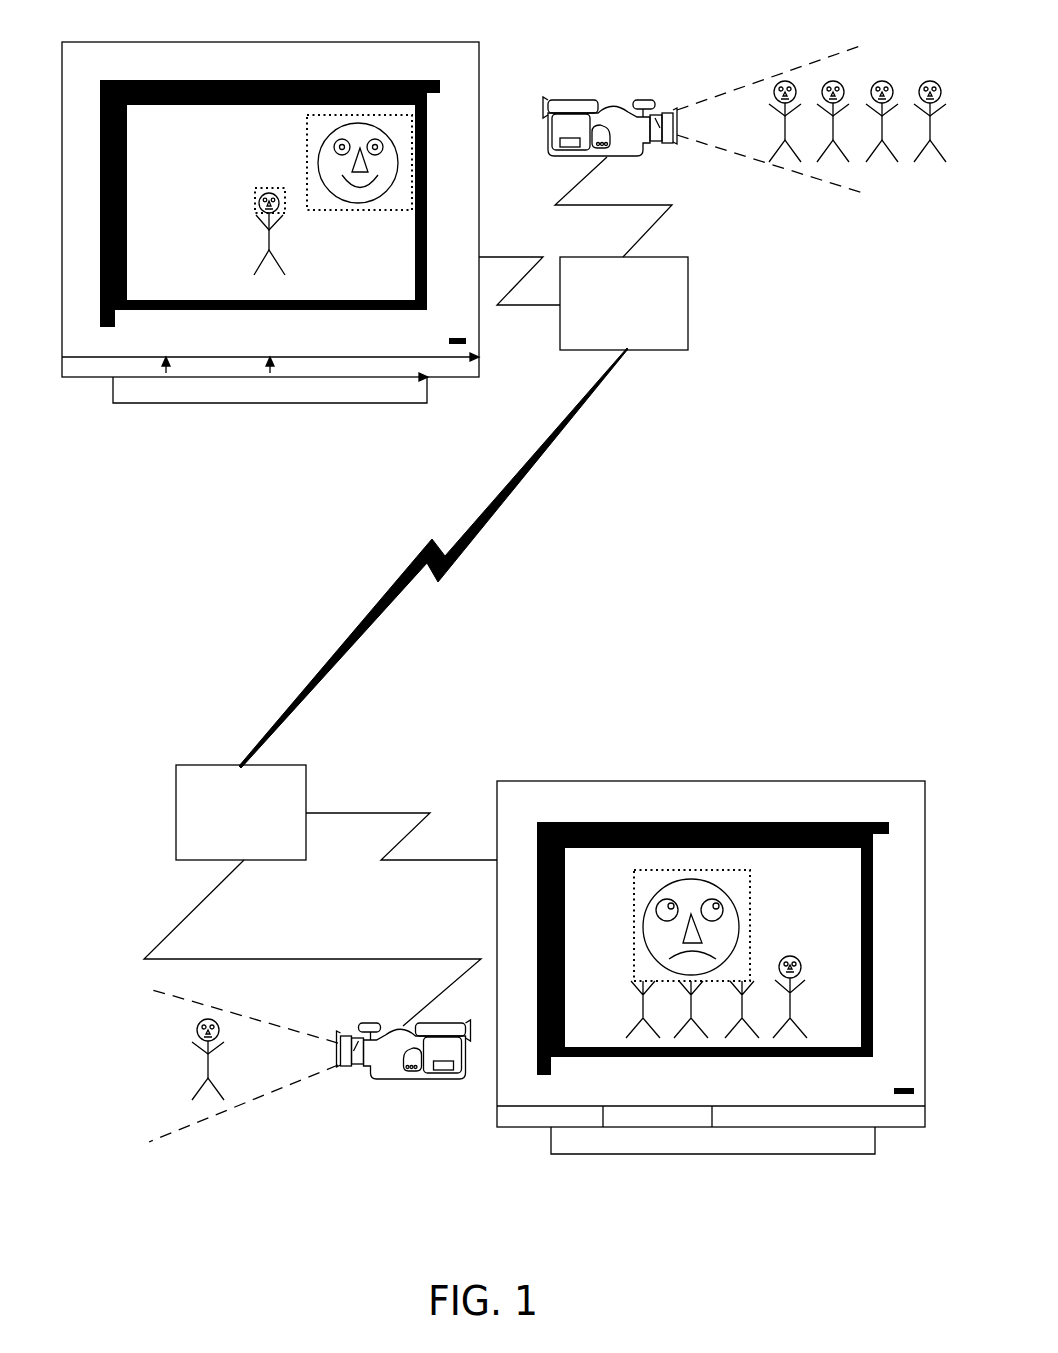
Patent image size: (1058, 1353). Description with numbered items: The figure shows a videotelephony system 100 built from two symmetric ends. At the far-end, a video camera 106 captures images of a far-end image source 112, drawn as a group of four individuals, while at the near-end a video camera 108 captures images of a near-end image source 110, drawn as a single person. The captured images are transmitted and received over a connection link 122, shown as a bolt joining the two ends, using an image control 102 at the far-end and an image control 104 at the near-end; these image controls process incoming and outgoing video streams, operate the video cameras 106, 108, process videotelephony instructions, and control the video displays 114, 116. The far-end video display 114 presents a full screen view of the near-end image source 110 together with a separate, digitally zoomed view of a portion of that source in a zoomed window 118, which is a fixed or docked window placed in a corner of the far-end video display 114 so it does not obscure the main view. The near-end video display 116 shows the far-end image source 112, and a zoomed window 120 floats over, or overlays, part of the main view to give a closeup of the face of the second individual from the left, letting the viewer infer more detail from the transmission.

The videotelephony system 100 is at (128, 583).
The image control 102 is at (624, 303).
The image control 104 is at (241, 812).
The video camera 106 is at (627, 88).
The video camera 108 is at (421, 1099).
The near-end image source 110 is at (160, 1038).
The far-end image source 112 is at (915, 66).
The far-end video display 114 is at (207, 158).
The near-end video display 116 is at (825, 901).
The zoomed window 118 is at (361, 217).
The zoomed window 120 is at (623, 928).
The connection link 122 is at (527, 538).